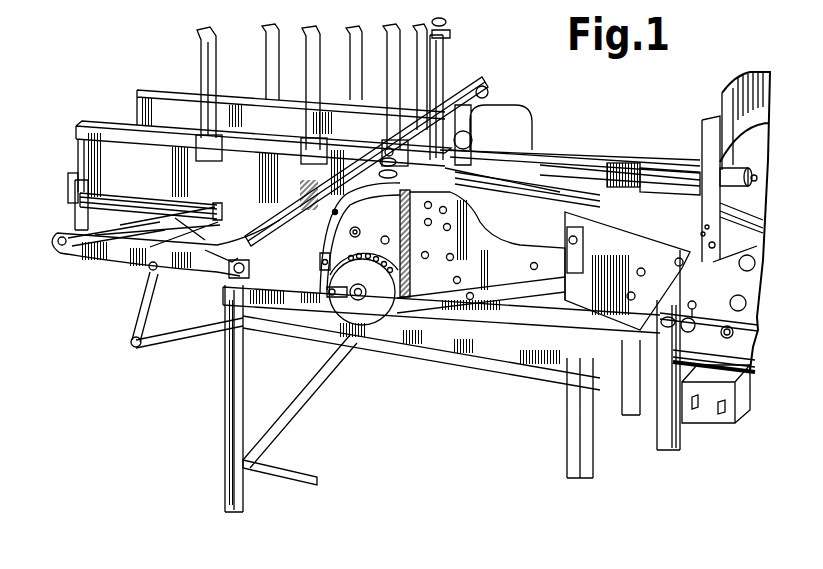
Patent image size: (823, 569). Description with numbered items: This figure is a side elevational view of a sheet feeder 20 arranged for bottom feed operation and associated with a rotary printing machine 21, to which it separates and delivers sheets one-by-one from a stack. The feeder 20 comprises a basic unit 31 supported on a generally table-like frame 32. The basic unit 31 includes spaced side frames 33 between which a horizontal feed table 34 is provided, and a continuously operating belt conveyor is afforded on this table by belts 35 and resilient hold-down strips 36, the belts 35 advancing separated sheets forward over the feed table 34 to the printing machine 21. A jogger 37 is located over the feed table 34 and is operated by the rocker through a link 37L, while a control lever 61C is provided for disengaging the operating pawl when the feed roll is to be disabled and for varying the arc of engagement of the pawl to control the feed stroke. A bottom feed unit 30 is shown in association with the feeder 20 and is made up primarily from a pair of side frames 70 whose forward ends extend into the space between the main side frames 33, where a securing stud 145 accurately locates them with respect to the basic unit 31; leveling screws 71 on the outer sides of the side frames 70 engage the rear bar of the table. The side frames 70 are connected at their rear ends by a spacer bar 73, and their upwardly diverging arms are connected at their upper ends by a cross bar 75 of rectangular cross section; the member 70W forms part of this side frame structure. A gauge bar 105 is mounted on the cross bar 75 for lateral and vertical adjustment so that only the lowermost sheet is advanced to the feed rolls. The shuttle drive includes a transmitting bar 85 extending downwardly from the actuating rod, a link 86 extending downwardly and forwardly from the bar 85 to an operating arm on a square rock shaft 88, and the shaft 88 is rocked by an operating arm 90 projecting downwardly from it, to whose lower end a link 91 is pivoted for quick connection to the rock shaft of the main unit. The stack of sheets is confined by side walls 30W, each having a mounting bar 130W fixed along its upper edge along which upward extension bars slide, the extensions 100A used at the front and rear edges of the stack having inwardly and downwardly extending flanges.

The sheet feeder 20 is at (580, 107).
The rotary printing machine 21 is at (720, 92).
The bottom feed unit 30 is at (458, 27).
The side walls 30W is at (261, 150).
The basic unit 31 is at (510, 309).
The frame 32 is at (222, 388).
The side frames 33 is at (537, 342).
The feed table 34 is at (512, 226).
The belts 35 is at (521, 196).
The resilient hold-down strips 36 is at (530, 178).
The jogger 37 is at (626, 165).
The link 37L is at (453, 294).
The control lever 61C is at (345, 300).
The side frames 70 is at (98, 250).
The feed beam 70W is at (353, 165).
The leveling screws 71 is at (226, 278).
The spacer bar 73 is at (67, 233).
The cross bar 75 is at (465, 82).
The transmitting bar 85 is at (73, 177).
The link 86 is at (130, 223).
The rock shaft 88 is at (190, 246).
The operating arm 90 is at (148, 294).
The link 91 is at (183, 340).
The extensions 100A is at (203, 52).
The gauge bar 105 is at (437, 75).
The mounting bar 130W is at (105, 128).
The securing stud 145 is at (333, 214).